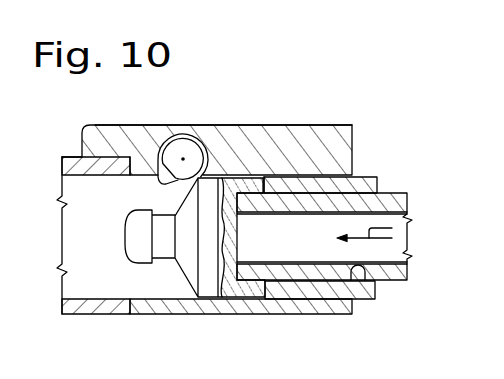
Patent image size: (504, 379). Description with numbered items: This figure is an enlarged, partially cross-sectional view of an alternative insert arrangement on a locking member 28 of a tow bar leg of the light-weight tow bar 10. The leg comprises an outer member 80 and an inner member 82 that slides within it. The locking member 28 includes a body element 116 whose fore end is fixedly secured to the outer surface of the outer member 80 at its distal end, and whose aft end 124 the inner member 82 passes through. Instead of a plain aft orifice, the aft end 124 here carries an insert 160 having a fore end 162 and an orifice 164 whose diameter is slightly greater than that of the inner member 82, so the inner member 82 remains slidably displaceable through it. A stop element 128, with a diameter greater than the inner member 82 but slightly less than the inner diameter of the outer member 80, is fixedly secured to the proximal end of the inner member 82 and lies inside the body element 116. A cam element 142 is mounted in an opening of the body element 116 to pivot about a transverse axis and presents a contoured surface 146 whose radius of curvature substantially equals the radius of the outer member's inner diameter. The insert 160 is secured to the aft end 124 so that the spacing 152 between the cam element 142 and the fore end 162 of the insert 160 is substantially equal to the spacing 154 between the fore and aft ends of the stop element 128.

The tow bar 10 is at (271, 217).
The locking member 28 is at (248, 104).
The outer member 80 is at (63, 157).
The inner member 82 is at (406, 283).
The body element 116 is at (315, 140).
The aft end 124 is at (350, 155).
The stop element 128 is at (252, 252).
The cam element 142 is at (182, 137).
The contoured surface 146 is at (156, 172).
The spacing 152 is at (409, 227).
The spacing 154 is at (412, 227).
The insert 160 is at (377, 190).
The fore end 162 is at (263, 192).
The orifice 164 is at (360, 272).